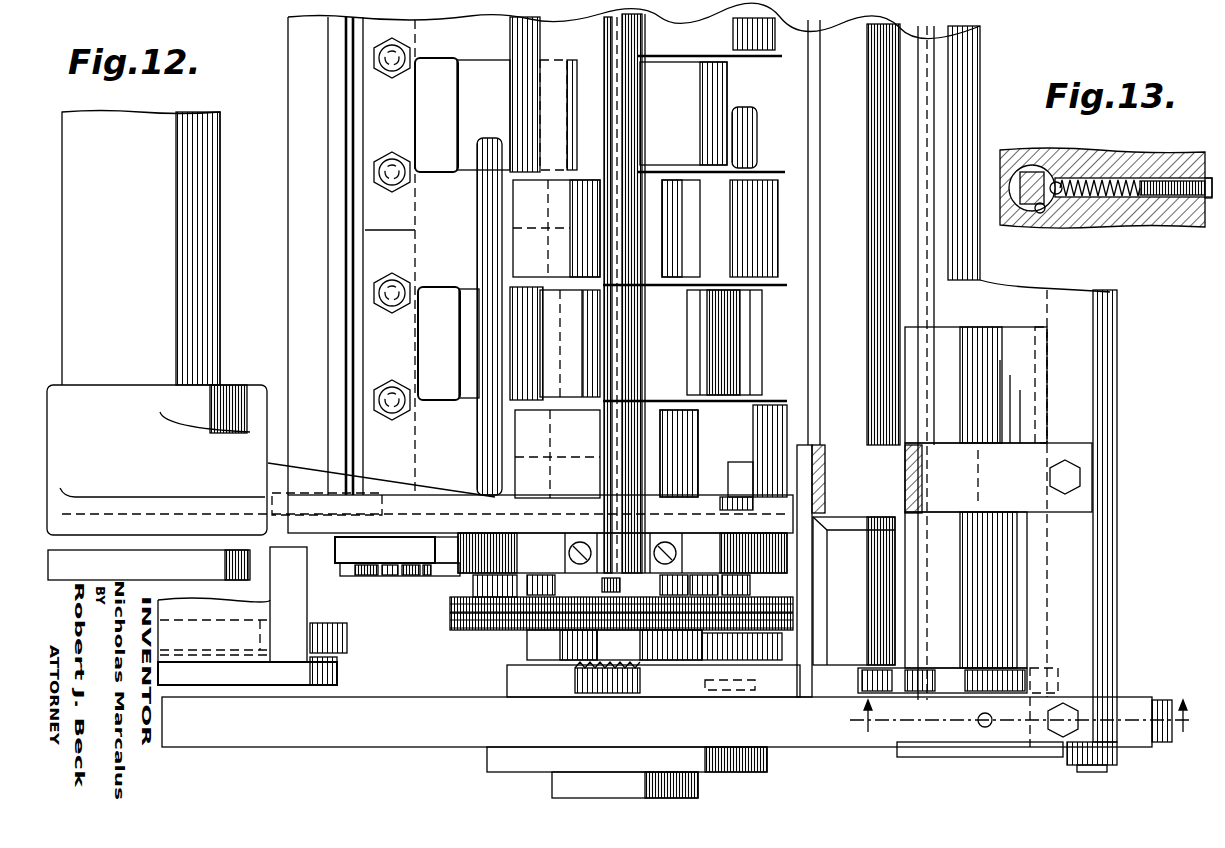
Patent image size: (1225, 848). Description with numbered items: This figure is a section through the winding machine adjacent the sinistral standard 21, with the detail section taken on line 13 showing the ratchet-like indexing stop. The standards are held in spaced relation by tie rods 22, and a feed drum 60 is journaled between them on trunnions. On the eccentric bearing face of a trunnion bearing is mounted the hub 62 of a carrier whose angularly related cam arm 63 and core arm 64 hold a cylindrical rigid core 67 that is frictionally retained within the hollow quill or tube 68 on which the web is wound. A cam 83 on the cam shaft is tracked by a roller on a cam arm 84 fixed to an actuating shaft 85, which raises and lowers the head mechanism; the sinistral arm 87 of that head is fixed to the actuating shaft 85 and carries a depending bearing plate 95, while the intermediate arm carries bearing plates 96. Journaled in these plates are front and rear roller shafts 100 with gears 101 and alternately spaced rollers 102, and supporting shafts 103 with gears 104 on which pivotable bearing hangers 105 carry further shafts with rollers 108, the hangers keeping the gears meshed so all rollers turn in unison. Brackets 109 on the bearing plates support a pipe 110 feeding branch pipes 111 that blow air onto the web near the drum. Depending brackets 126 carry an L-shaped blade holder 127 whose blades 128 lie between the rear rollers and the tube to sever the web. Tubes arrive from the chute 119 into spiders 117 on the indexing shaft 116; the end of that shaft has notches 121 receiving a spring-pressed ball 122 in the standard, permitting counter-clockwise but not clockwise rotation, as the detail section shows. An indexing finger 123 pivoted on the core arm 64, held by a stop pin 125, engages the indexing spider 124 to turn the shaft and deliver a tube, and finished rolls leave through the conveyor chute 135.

In FIG. 12, the section line 13— 13 is at (862, 718).
In FIG. 12, the sinistral end section or standard 21 is at (330, 748).
In FIG. 13, the sinistral end section or standard 21 is at (1120, 162).
In FIG. 12, the tie rod 22 is at (1100, 368).
In FIG. 12, the feed drum 60 is at (296, 126).
In FIG. 12, the hub of carrier 62 is at (530, 640).
In FIG. 12, the cam arm 63 is at (335, 557).
In FIG. 12, the core arm 64 is at (562, 648).
In FIG. 12, the cylindrical rigid core 67 is at (625, 655).
In FIG. 12, the quill or tube 68 is at (858, 309).
In FIG. 12, the cam 83 is at (215, 620).
In FIG. 12, the cam arm 84 is at (118, 557).
In FIG. 12, the actuating shaft 85 is at (206, 326).
In FIG. 12, the sinistral arm 87 is at (274, 462).
In FIG. 12, the bearing plate 95 is at (722, 545).
In FIG. 12, the bearing plate 96 is at (660, 600).
In FIG. 12, the roller shaft 100 is at (552, 308).
In FIG. 12, the gear 101 is at (545, 590).
In FIG. 12, the roller 102 is at (515, 238).
In FIG. 12, the supporting shaft 103 is at (478, 212).
In FIG. 12, the gear 104 is at (465, 612).
In FIG. 12, the bearing hanger 105 is at (778, 483).
In FIG. 12, the roller 108 is at (500, 112).
In FIG. 12, the bracket 109 is at (583, 544).
In FIG. 12, the pipe 110 is at (638, 342).
In FIG. 12, the branch pipe 111 is at (660, 172).
In FIG. 12, the indexing shaft 116 is at (1010, 585).
In FIG. 13, the indexing shaft 116 is at (1030, 168).
In FIG. 12, the spider 117 is at (1002, 335).
In FIG. 12, the chute 119 is at (825, 495).
In FIG. 13, the notch 121 is at (1056, 180).
In FIG. 12, the spring-pressed ball 122 is at (990, 728).
In FIG. 13, the spring-pressed ball 122 is at (1100, 205).
In FIG. 12, the indexing finger 123 is at (663, 692).
In FIG. 12, the indexing spider 124 is at (1015, 668).
In FIG. 12, the stop pin 125 is at (575, 683).
In FIG. 12, the depending bracket 126 is at (417, 548).
In FIG. 12, the blade holder 127 is at (352, 98).
In FIG. 12, the blade 128 is at (470, 54).
In FIG. 12, the conveyor chute 135 is at (300, 600).